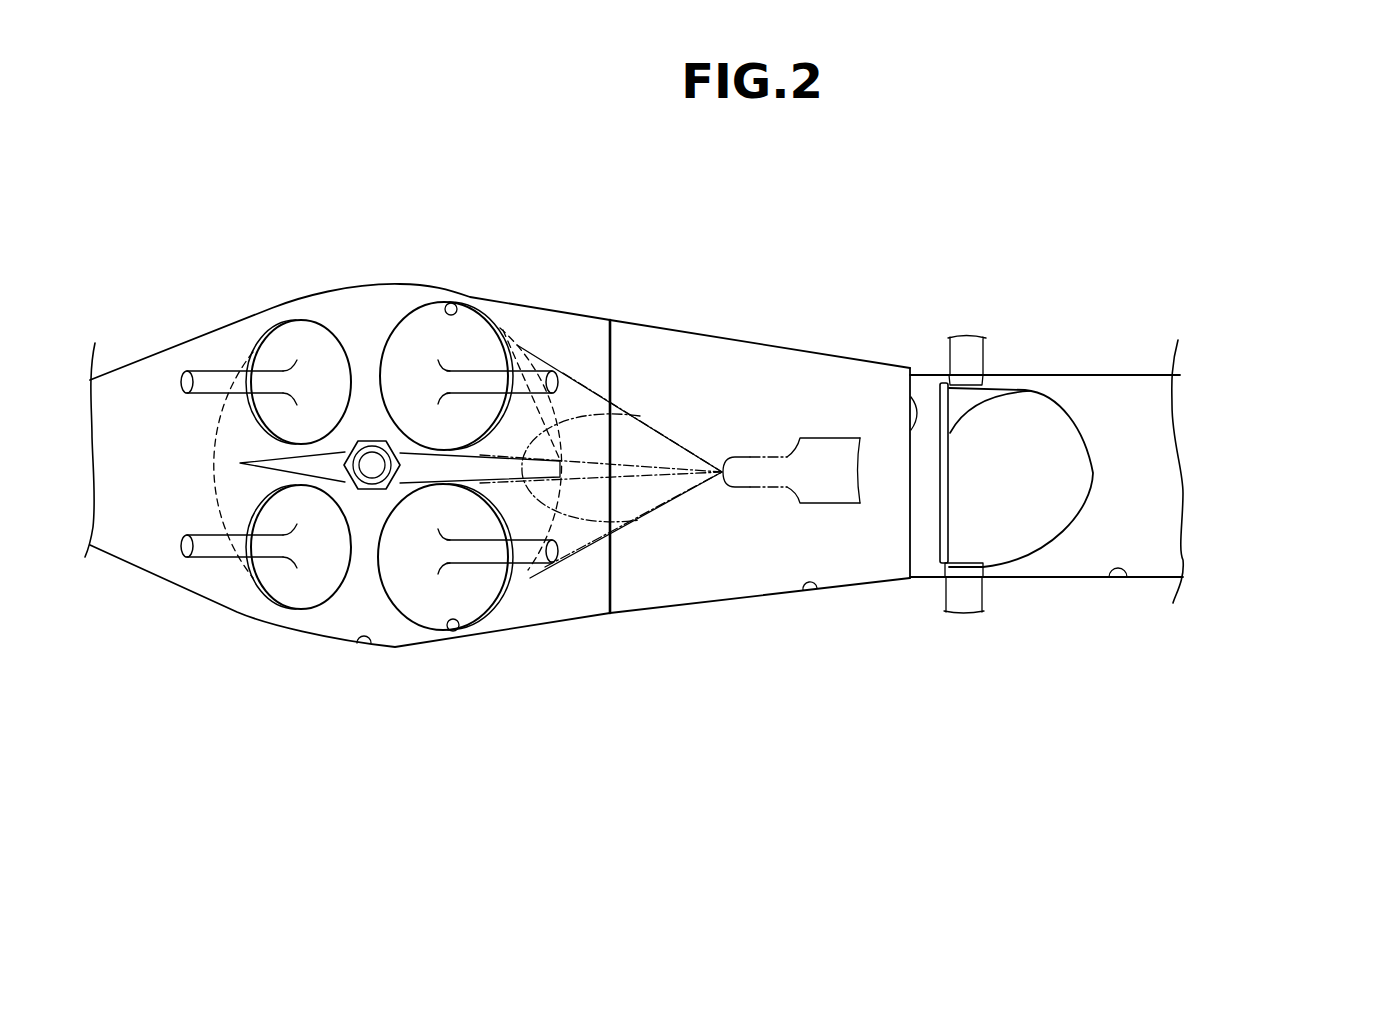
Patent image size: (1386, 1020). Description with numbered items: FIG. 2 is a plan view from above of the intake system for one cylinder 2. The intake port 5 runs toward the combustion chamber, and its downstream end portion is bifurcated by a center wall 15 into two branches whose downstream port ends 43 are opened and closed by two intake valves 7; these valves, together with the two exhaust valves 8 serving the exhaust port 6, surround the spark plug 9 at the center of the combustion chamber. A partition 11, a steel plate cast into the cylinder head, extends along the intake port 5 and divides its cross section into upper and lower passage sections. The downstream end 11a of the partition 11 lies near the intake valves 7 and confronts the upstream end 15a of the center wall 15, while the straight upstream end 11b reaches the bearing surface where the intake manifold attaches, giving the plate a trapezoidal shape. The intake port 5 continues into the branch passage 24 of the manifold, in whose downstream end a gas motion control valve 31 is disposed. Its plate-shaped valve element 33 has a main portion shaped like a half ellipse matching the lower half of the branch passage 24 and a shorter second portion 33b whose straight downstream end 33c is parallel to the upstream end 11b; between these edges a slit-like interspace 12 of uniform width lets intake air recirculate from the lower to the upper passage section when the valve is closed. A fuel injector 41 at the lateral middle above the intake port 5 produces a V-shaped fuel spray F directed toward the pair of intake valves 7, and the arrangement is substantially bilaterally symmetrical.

The cylinder 2 is at (368, 645).
The intake port 5 is at (813, 593).
The exhaust port 6 is at (150, 380).
The intake valve 7 is at (433, 327).
The exhaust valve 8 is at (303, 340).
The spark plug 9 is at (372, 440).
The partition 11 is at (723, 583).
The downstream end of partition 11a is at (594, 337).
The upstream end of partition 11b is at (908, 390).
The interspace 12 is at (918, 560).
The center wall 15 is at (512, 468).
The upstream end of center wall 15a is at (570, 338).
The branch passage 24 is at (1128, 578).
The gas motion control valve 31 is at (1118, 475).
The valve element 33 is at (1070, 487).
The second portion of valve element 33b is at (977, 405).
The downstream end of second portion 33c is at (945, 430).
The fuel injector 41 is at (763, 490).
The downstream port end 43 is at (458, 303).
The fuel spray F is at (680, 497).